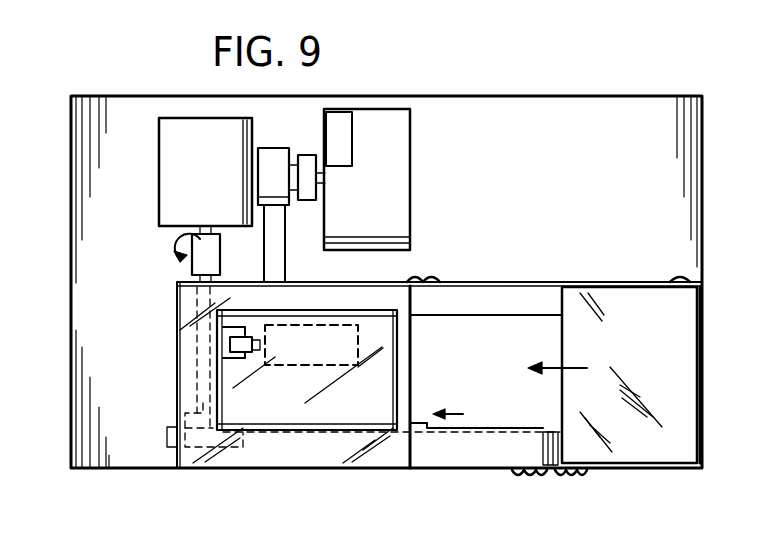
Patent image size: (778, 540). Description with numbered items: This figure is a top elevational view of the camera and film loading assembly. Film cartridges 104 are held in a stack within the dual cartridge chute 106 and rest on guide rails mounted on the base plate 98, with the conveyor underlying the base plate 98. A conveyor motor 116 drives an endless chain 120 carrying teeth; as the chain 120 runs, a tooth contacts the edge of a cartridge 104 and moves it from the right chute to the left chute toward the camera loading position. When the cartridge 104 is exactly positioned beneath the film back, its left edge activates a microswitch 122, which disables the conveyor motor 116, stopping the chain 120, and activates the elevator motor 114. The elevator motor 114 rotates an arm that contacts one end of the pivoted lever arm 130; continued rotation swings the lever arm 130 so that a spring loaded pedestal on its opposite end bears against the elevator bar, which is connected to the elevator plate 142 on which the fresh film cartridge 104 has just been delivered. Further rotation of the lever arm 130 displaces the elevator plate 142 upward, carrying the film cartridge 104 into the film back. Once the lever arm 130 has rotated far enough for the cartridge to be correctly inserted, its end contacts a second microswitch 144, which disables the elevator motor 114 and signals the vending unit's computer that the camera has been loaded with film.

The base plate 98 is at (92, 366).
The film cartridge 104 is at (675, 367).
The cartridge chute 106 is at (447, 276).
The elevator motor 114 is at (398, 129).
The conveyor motor 116 is at (182, 127).
The chain 120 is at (437, 432).
The microswitch 122 is at (541, 300).
The lever arm 130 is at (277, 262).
The elevator plate 142 is at (249, 413).
The microswitch 144 is at (288, 365).